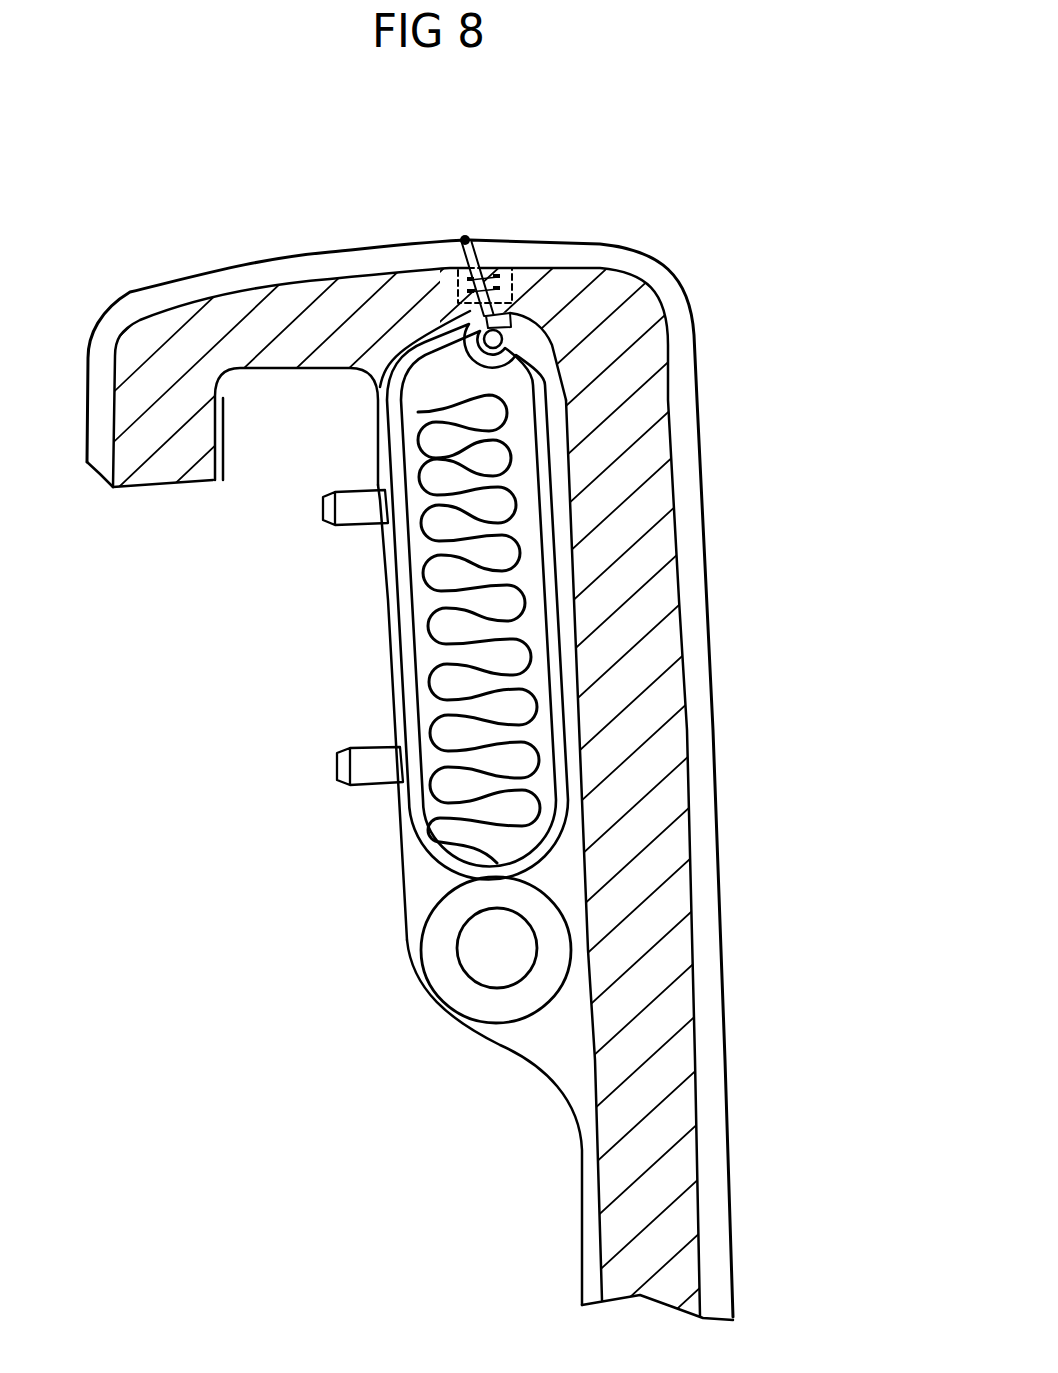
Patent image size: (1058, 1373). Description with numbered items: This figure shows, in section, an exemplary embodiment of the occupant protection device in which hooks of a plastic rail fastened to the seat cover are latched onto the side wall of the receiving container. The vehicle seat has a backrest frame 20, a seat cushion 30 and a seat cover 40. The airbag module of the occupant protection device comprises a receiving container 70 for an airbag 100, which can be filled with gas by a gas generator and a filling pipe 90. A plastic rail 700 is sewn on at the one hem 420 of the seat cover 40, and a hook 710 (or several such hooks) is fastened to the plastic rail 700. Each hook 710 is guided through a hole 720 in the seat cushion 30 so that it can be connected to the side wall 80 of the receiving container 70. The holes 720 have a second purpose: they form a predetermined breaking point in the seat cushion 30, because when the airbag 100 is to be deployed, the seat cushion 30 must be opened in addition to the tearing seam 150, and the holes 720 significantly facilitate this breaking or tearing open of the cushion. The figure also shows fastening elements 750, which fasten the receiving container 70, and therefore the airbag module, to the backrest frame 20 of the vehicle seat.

The backrest frame 20 is at (265, 479).
The seat cushion 30 is at (655, 1135).
The seat cover 40 is at (720, 1026).
The receiving container 70 is at (418, 554).
The side wall 80 is at (508, 318).
The filling pipe 90 is at (440, 968).
The airbag 100 is at (432, 478).
The tearing seam 150 is at (464, 236).
The hem 420 is at (476, 268).
The plastic rail 700 is at (472, 310).
The hook 710 is at (503, 339).
The hole 720 is at (465, 304).
The fastening element 750 is at (352, 508).